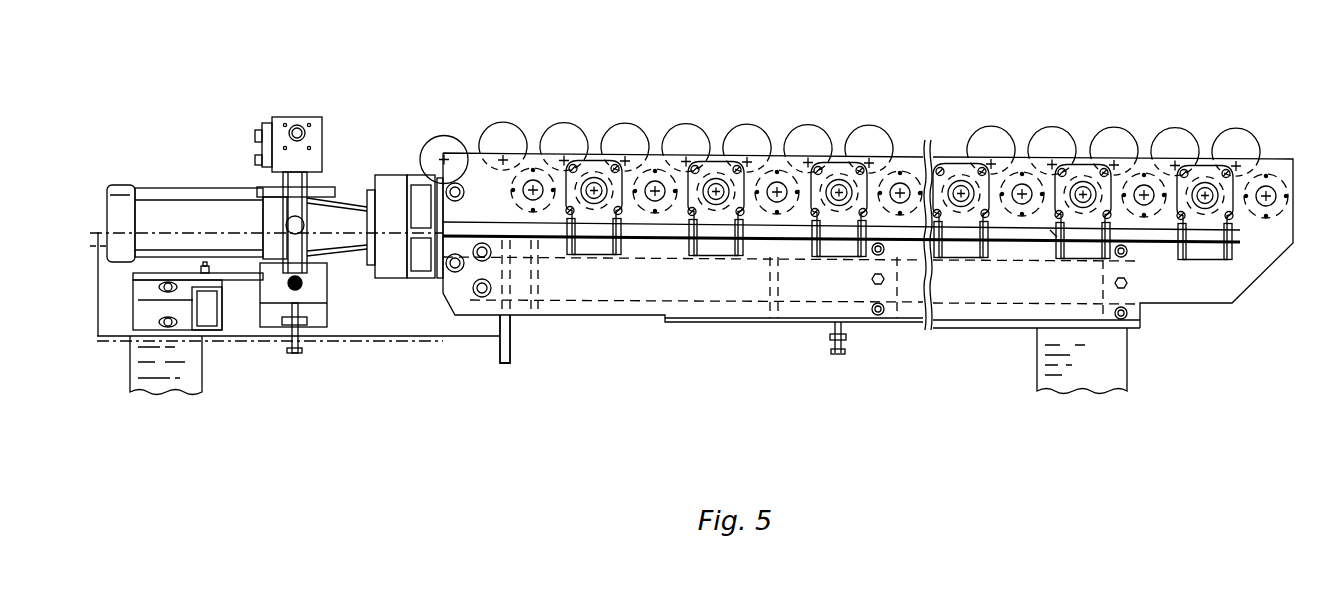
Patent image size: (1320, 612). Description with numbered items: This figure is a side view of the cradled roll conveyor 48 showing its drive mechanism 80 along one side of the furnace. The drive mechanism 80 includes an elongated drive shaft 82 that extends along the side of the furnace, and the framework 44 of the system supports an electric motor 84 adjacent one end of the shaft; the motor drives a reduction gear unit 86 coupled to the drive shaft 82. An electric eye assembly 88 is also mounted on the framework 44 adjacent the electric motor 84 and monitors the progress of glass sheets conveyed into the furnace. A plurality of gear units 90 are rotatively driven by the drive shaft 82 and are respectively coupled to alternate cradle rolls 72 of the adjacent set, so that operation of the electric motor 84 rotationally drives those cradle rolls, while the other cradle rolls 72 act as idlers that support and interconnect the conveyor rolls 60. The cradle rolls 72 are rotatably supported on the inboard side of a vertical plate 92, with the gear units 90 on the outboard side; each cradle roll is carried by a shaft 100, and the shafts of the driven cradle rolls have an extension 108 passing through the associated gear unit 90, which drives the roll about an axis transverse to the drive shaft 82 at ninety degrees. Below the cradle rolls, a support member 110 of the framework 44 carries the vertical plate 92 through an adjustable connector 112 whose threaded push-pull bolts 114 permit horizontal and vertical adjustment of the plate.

The framework 44 is at (1136, 376).
The cradled roll conveyor 48 is at (937, 122).
The conveyor rolls 60 is at (545, 137).
The cradle rolls 72 is at (538, 210).
The drive mechanism 80 is at (364, 103).
The drive shaft 82 is at (520, 250).
The electric motor 84 is at (215, 190).
The reduction gear unit 86 is at (392, 268).
The electric eye assembly 88 is at (321, 152).
The gear units 90 is at (594, 168).
The vertical plate 92 is at (777, 170).
The shaft 100 is at (960, 205).
The extension 108 is at (1020, 207).
The support member 110 is at (812, 327).
The adjustable connector 112 is at (848, 348).
The threaded push-pull bolts 114 is at (480, 296).